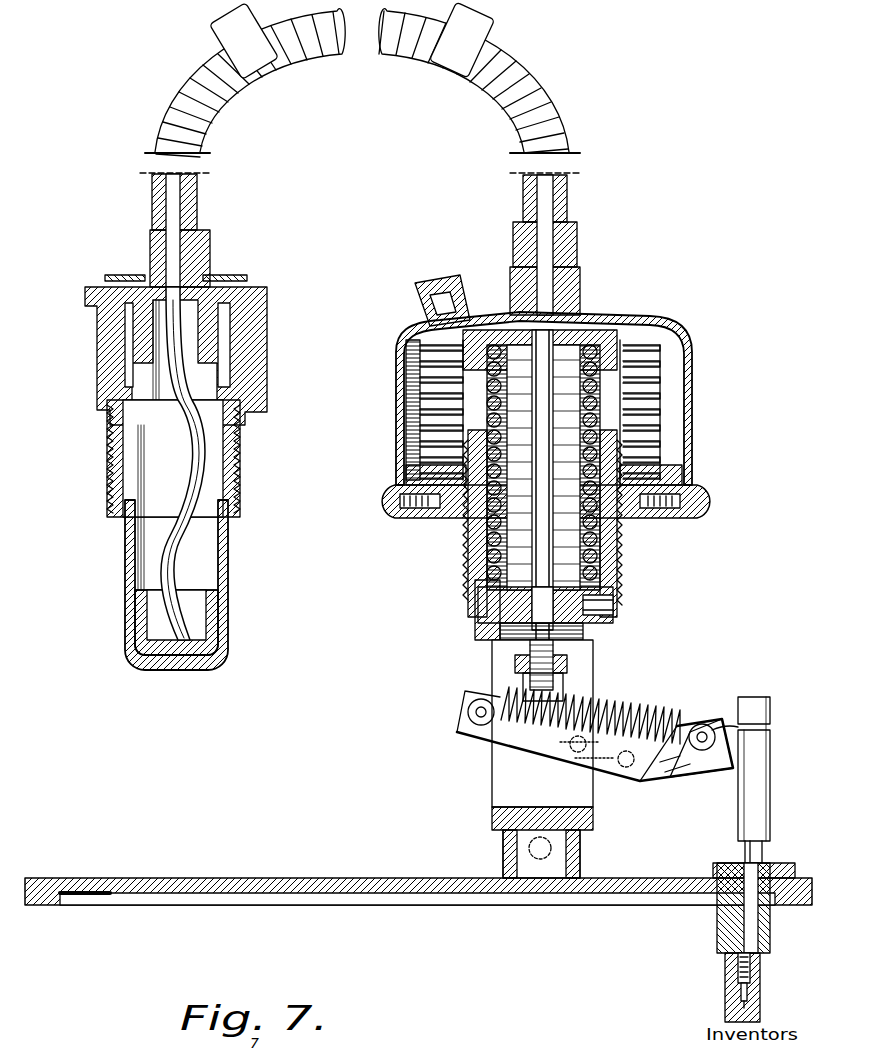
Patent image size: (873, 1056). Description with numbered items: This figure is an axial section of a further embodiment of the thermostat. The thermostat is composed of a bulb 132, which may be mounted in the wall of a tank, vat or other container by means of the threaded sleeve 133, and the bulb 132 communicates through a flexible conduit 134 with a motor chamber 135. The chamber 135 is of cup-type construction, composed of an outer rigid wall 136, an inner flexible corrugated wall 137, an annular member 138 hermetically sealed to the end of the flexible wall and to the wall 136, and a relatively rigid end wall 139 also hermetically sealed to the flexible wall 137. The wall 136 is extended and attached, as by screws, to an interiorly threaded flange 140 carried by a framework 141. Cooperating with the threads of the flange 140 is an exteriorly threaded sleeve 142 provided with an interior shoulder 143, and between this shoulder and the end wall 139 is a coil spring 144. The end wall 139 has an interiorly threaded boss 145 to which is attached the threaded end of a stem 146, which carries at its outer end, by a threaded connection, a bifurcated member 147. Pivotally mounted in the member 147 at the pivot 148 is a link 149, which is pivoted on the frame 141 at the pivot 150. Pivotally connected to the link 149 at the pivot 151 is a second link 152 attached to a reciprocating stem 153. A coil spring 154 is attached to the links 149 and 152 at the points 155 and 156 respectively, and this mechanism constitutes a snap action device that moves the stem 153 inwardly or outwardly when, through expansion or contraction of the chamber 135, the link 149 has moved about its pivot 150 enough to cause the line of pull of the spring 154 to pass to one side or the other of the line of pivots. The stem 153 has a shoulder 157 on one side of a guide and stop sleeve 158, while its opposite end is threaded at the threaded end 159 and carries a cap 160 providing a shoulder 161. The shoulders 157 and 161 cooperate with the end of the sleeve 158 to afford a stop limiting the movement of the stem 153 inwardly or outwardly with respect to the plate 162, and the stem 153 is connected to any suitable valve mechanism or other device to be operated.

The bulb 132 is at (212, 570).
The threaded sleeve 133 is at (240, 452).
The conduit 134 is at (378, 40).
The motor chamber 135 is at (672, 342).
The outer rigid wall 136 is at (694, 384).
The inner flexible corrugated wall 137 is at (656, 407).
The annular member 138 is at (668, 472).
The end wall 139 is at (630, 322).
The flange 140 is at (642, 505).
The framework 141 is at (588, 668).
The exteriorly threaded sleeve 142 is at (470, 560).
The interior shoulder 143 is at (487, 605).
The coil spring 144 is at (468, 508).
The threaded boss 145 is at (585, 340).
The stem 146 is at (553, 603).
The bifurcated member 147 is at (560, 698).
The pivot 148 is at (533, 747).
The link 149 is at (588, 763).
The pivot 150 is at (572, 750).
The pivot 151 is at (628, 767).
The second link 152 is at (684, 769).
The reciprocating stem 153 is at (760, 770).
The coil spring 154 is at (650, 716).
The spring attachment point 155 is at (470, 716).
The spring attachment point 156 is at (722, 710).
The shoulder 157 is at (766, 848).
The guide and stop sleeve 158 is at (718, 913).
The threaded end 159 is at (760, 962).
The cap 160 is at (737, 985).
The shoulder 161 is at (722, 950).
The plate 162 is at (596, 895).